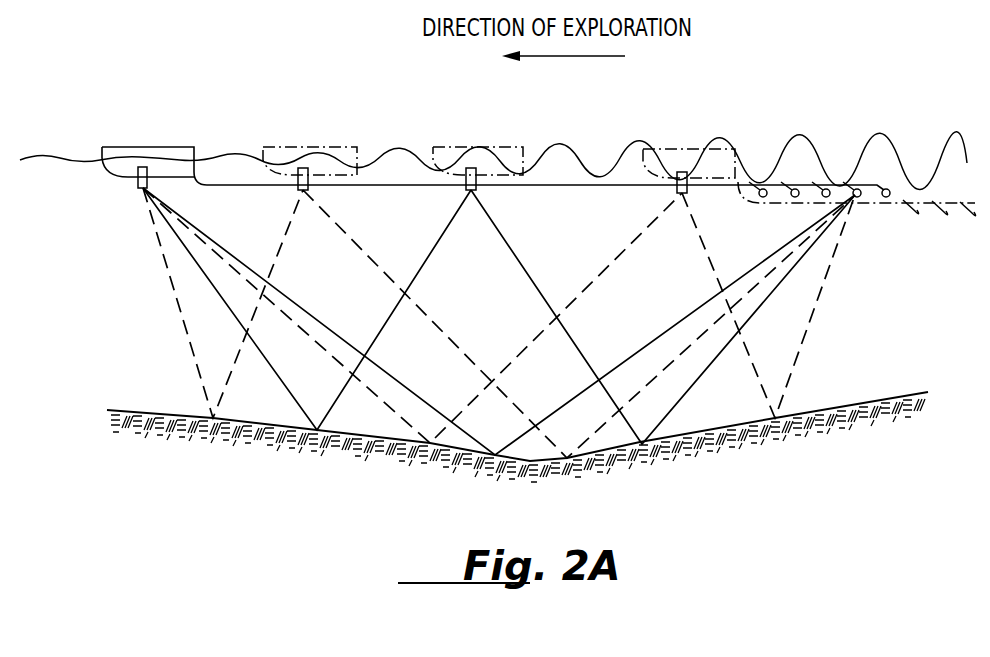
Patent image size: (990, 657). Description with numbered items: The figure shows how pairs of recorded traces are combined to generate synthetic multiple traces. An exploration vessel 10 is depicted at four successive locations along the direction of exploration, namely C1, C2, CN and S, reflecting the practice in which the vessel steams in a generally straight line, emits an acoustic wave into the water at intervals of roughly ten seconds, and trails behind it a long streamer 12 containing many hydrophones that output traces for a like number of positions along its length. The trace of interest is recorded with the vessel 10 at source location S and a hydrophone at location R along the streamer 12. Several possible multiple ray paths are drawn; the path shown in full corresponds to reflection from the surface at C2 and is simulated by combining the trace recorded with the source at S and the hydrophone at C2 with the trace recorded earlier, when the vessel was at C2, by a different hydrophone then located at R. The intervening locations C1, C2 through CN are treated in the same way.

The exploration vessel 10 is at (115, 148).
The streamer 12 is at (382, 185).
The source location S is at (142, 140).
The hydrophone location R is at (853, 172).
The Nth intervening vessel location CN is at (310, 154).
The second intervening vessel location C2 is at (478, 154).
The first intervening vessel location C1 is at (689, 156).